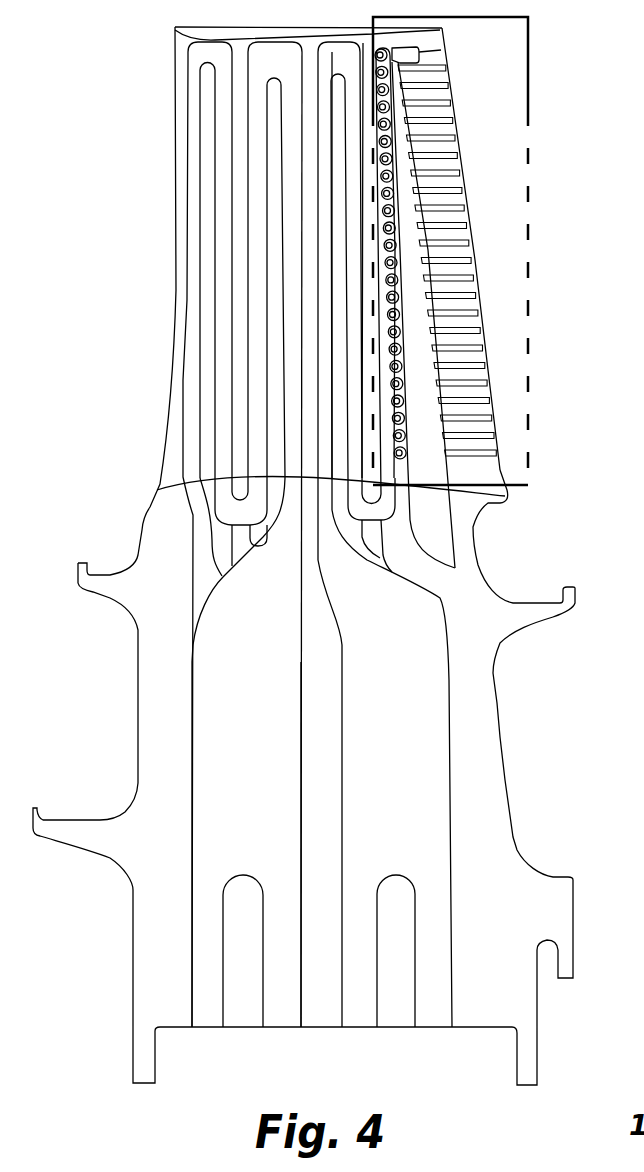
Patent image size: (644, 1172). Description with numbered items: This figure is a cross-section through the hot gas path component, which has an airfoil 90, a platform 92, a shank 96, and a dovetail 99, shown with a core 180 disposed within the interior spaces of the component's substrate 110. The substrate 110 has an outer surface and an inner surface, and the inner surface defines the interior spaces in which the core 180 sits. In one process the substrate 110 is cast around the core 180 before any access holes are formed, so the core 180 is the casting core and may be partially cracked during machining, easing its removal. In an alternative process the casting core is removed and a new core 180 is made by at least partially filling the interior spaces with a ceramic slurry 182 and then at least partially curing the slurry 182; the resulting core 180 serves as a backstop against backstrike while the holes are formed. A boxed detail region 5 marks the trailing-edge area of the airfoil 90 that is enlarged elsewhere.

The detail region of FIG. 5 (trailing edge cooling) 5 is at (528, 85).
The airfoil 90 is at (180, 297).
The platform 92 is at (158, 507).
The shank 96 is at (477, 722).
The root 99 is at (508, 980).
The substrate 110 is at (140, 630).
The core 180 is at (193, 703).
The slurry 182 is at (248, 719).